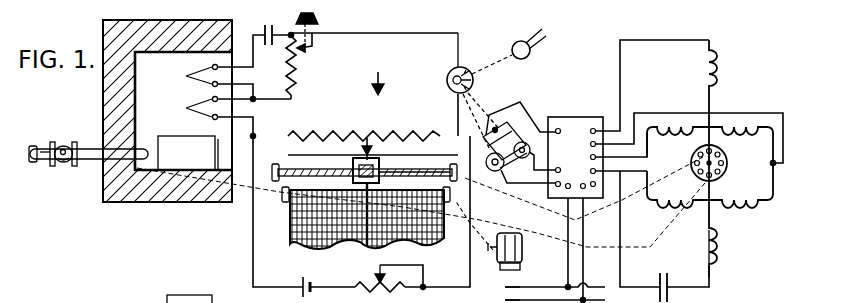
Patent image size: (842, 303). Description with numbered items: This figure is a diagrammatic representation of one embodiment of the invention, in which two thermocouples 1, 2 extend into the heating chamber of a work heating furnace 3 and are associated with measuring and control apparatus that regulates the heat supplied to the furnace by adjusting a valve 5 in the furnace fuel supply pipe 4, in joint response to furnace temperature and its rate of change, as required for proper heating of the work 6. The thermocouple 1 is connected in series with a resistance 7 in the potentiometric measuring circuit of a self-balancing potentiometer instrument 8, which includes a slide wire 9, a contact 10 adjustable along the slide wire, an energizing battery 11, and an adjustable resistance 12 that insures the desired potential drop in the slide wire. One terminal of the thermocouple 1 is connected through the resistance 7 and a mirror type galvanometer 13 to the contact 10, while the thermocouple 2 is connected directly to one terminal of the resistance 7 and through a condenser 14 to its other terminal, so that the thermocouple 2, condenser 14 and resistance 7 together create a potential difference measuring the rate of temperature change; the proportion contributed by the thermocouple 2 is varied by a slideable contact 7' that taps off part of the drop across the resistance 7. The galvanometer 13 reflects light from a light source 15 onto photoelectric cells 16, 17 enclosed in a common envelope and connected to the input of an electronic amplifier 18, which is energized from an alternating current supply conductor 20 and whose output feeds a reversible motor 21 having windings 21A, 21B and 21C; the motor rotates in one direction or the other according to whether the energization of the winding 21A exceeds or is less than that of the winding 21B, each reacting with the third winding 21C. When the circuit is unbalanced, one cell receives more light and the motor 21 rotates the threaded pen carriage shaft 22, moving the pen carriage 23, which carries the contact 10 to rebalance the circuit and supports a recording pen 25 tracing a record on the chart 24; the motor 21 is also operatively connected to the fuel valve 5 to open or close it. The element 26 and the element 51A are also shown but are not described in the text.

The thermocouple 1 is at (199, 106).
The thermocouple 2 is at (200, 74).
The work heating furnace 3 is at (104, 112).
The furnace fuel supply pipe 4 is at (90, 149).
The valve 5 is at (64, 163).
The work 6 is at (172, 136).
The resistance 7 is at (299, 67).
The contact 7' is at (322, 37).
The self-balancing potentiometer instrument 8 is at (378, 75).
The slide wire 9 is at (338, 134).
The contact 10 is at (370, 141).
The energizing battery 11 is at (309, 283).
The resistance 12 is at (375, 295).
The mirror type galvanometer 13 is at (465, 67).
The condenser 14 is at (275, 46).
The light source 15 is at (512, 42).
The photoelectric cell 16 is at (488, 171).
The photoelectric cell 17 is at (526, 154).
The electronic amplifier 18 is at (575, 122).
The alternating current supply conductor 20 is at (506, 291).
The reversible motor 21 is at (713, 159).
The motor winding 21A is at (776, 148).
The motor winding 21B is at (743, 216).
The third motor winding 21C is at (719, 253).
The threaded pen carriage shaft 22 is at (286, 168).
The pen carriage 23 is at (382, 172).
The record strip or chart 24 is at (300, 233).
The recording pen 25 is at (352, 173).
The motor 26 is at (524, 251).
The block 51A is at (214, 302).